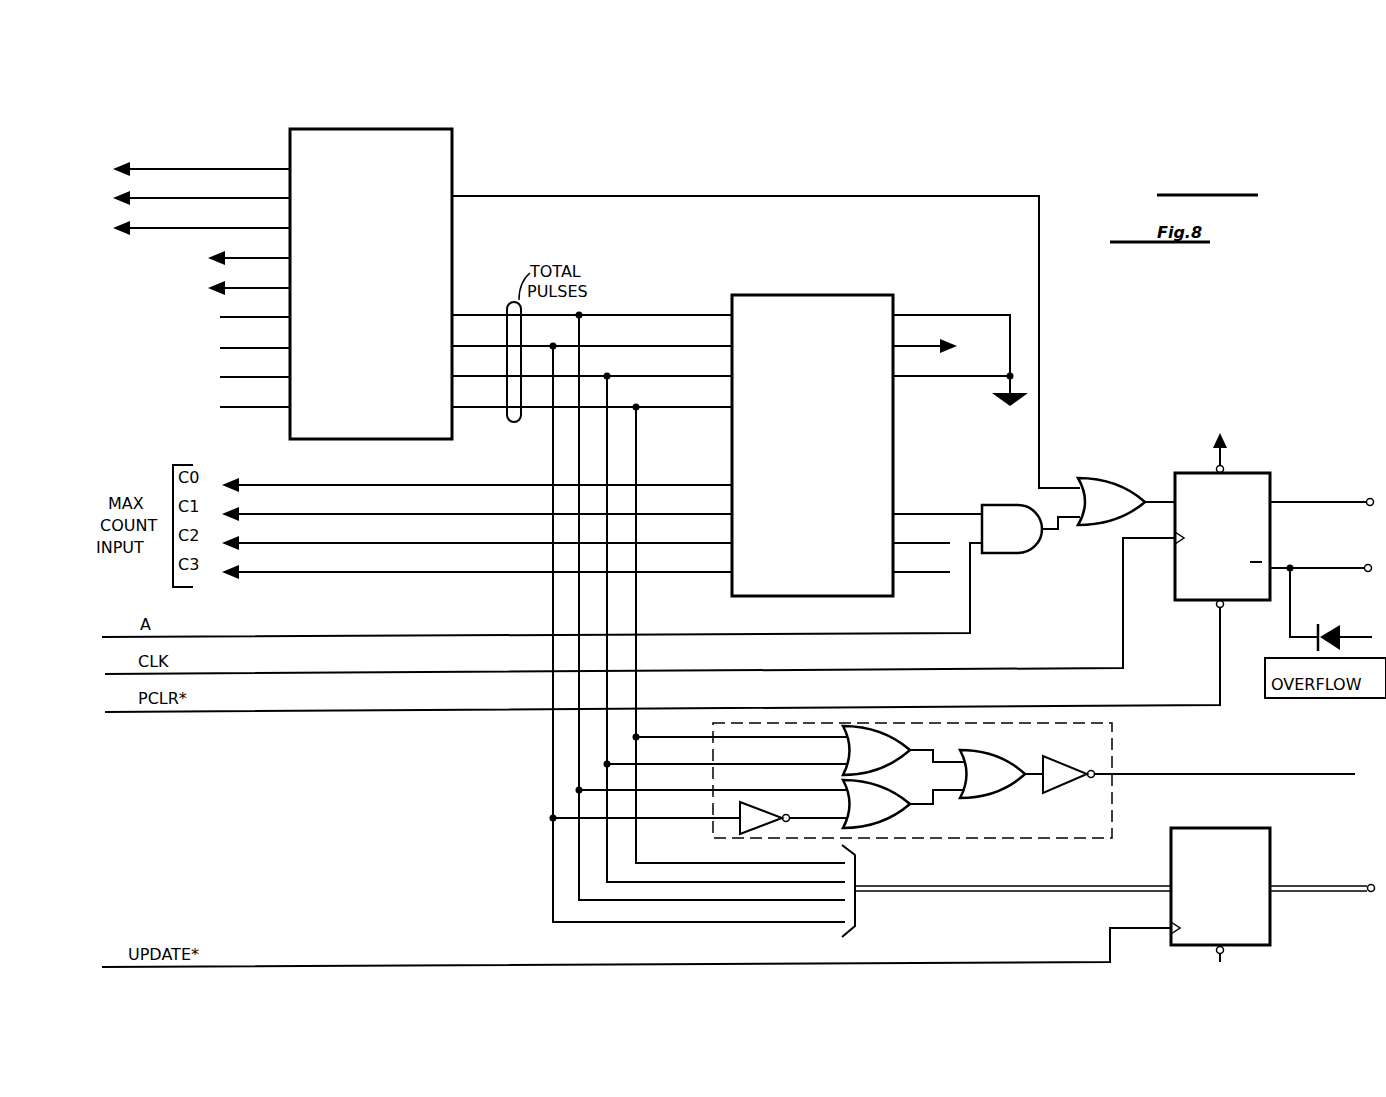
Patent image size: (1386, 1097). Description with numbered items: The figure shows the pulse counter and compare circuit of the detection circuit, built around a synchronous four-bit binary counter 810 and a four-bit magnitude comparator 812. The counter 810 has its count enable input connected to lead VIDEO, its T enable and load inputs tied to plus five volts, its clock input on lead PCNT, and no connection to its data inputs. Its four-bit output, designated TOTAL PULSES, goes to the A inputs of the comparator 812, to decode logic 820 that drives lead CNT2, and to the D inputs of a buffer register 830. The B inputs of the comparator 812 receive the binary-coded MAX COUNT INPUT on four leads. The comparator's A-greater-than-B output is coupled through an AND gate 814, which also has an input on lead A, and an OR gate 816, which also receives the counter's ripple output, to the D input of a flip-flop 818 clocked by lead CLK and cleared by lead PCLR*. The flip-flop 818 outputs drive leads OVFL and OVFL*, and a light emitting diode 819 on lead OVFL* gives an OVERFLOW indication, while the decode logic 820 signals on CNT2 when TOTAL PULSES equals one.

The synchronous 4-bit binary counter 810 is at (407, 128).
The 4-bit magnitude comparator 812 is at (820, 295).
The AND gate 814 is at (1014, 505).
The OR gate 816 is at (1093, 478).
The flip-flop 818 is at (1243, 475).
The light emitting diode 819 is at (1329, 623).
The decode logic 820 is at (960, 840).
The buffer register 830 is at (1207, 828).